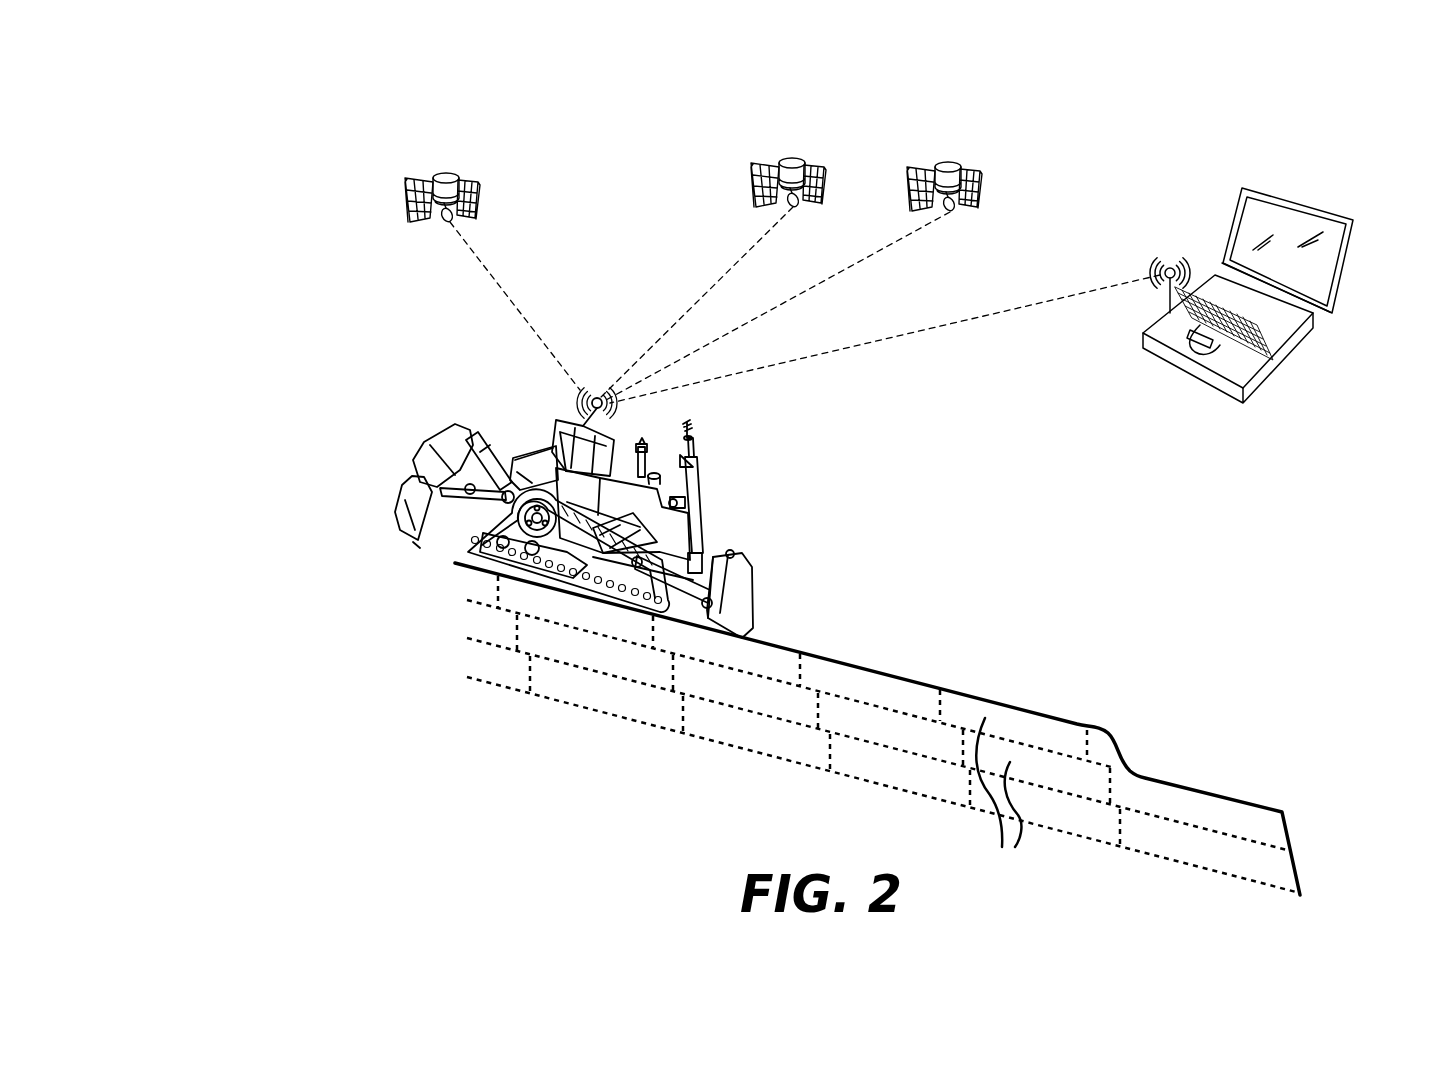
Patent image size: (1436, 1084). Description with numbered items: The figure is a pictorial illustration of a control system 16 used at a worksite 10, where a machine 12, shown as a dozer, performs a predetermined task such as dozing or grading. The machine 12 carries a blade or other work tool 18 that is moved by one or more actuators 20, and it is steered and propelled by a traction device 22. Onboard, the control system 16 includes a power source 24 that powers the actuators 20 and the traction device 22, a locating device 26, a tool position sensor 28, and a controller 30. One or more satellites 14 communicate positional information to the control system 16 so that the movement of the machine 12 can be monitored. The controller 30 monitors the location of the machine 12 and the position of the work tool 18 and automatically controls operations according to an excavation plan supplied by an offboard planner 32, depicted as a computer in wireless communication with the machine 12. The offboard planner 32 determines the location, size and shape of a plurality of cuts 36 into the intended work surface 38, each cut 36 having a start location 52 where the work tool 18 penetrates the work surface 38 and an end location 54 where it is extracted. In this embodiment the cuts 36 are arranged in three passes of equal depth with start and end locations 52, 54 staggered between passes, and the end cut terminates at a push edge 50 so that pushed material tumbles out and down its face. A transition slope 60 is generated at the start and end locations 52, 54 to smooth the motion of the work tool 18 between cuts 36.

The worksite 10 is at (1188, 478).
The machine 12 is at (412, 398).
The satellite 14 is at (447, 176).
The control system 16 is at (265, 337).
The work tool 18 is at (740, 573).
The actuators 20 is at (697, 517).
The traction device 22 is at (472, 545).
The power source 24 is at (645, 515).
The locating device 26 is at (603, 427).
The tool position sensor 28 is at (690, 460).
The controller 30 is at (573, 457).
The offboard planner 32 is at (1273, 198).
The cuts 36 is at (1001, 799).
The work surface 38 is at (890, 668).
The push edge 50 is at (908, 724).
The start location 52 is at (883, 723).
The end location 54 is at (802, 663).
The transition slope 60 is at (1123, 757).